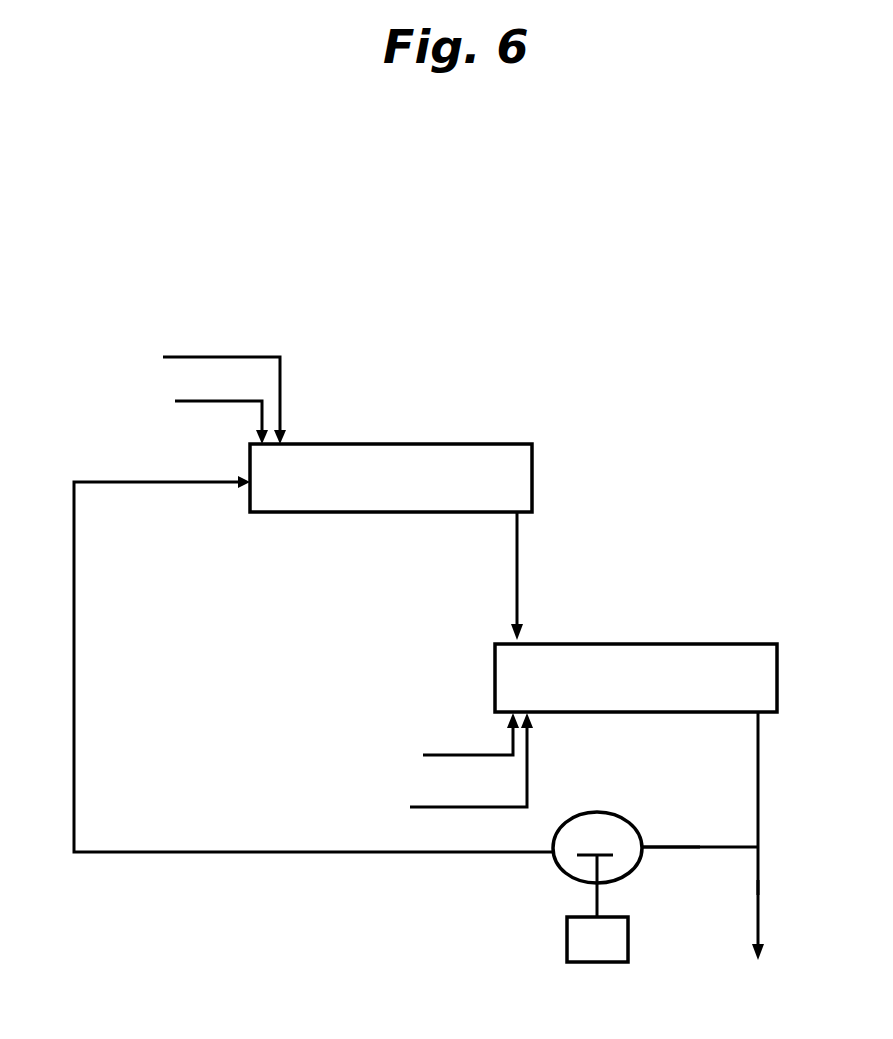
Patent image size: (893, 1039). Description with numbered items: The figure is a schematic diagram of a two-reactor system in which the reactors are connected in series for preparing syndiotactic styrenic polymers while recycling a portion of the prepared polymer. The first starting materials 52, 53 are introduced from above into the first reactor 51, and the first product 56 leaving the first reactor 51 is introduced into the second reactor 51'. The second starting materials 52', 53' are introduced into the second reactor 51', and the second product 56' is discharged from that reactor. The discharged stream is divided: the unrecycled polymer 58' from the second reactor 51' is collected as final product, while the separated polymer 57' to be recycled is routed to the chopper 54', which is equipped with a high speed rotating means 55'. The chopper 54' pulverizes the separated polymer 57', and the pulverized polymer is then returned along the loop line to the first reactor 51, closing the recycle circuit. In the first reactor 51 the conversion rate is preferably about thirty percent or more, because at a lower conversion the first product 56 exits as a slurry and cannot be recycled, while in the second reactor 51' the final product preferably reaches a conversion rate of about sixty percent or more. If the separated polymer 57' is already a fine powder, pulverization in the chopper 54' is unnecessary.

The first reactor 51 is at (391, 451).
The first starting material 52 is at (194, 422).
The first starting material 53 is at (201, 395).
The first product 56 is at (543, 576).
The second reactor 51' is at (636, 651).
The second starting material 52' is at (446, 744).
The second starting material 53' is at (446, 768).
The second product 56' is at (790, 836).
The unrecycled polymer 58' is at (797, 880).
The chopper 54' is at (542, 880).
The high speed rotating means 55' is at (553, 964).
The separated polymer 57' is at (668, 880).